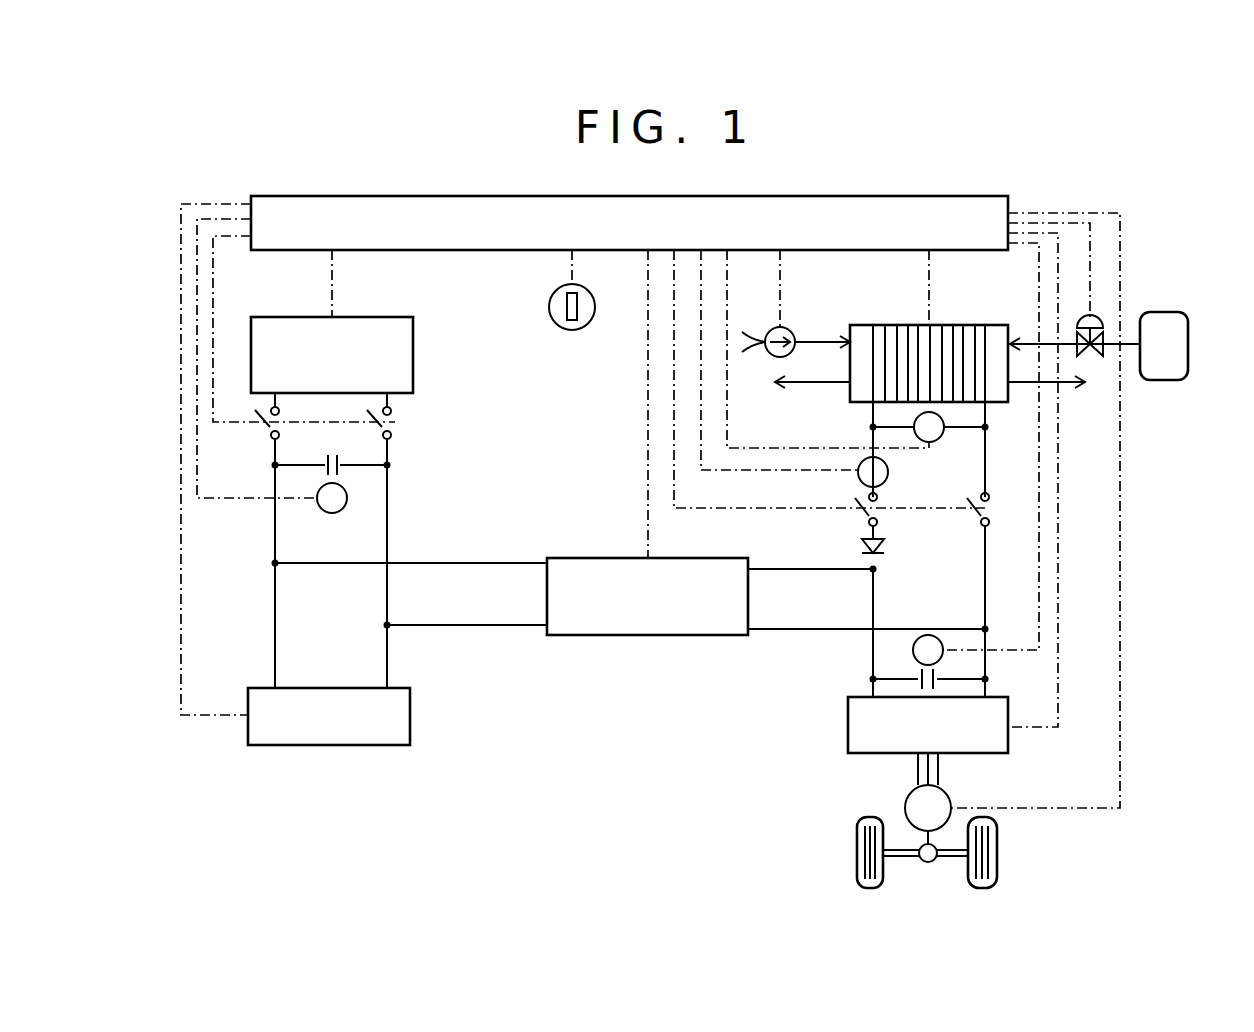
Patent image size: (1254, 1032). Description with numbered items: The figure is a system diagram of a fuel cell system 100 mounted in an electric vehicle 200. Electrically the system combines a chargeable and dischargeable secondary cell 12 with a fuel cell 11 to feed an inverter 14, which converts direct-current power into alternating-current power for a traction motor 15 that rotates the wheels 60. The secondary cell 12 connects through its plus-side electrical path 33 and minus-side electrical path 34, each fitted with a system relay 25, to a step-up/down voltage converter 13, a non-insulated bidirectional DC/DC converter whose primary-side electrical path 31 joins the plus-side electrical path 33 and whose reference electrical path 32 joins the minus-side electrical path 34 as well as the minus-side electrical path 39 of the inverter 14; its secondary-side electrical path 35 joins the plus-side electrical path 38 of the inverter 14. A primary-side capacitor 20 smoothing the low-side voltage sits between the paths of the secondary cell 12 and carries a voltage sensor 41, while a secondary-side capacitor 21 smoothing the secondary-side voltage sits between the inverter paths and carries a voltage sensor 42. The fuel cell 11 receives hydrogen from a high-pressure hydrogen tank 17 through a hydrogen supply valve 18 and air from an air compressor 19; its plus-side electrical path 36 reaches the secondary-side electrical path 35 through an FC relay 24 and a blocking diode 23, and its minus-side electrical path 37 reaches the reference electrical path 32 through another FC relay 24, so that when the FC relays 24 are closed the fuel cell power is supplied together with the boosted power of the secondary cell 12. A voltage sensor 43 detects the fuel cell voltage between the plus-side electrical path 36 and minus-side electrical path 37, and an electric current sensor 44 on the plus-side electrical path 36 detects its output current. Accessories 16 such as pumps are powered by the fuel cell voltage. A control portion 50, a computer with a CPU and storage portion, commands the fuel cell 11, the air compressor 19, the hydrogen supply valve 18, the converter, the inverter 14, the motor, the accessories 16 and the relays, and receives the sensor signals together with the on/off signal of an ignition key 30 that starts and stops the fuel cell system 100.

The fuel cell system 100 is at (174, 178).
The electric vehicle 200 is at (1137, 760).
The fuel cell 11 is at (995, 325).
The secondary cell 12 is at (378, 317).
The step-up/down voltage converter 13 is at (583, 636).
The inverter 14 is at (848, 742).
The traction motor 15 is at (905, 803).
The accessories 16 is at (355, 746).
The high-pressure hydrogen tank 17 is at (1178, 312).
The hydrogen supply valve 18 is at (1097, 335).
The air compressor 19 is at (800, 332).
The primary-side capacitor 20 is at (326, 453).
The secondary-side capacitor 21 is at (915, 689).
The blocking diode 23 is at (886, 549).
The FC relay 24 is at (868, 522).
The system relay 25 is at (392, 433).
The ignition key 30 is at (578, 330).
The primary-side electrical path 31 is at (497, 563).
The reference electrical path 32 is at (452, 627).
The plus-side electrical path of the secondary cell 33 is at (275, 484).
The minus-side electrical path of the secondary cell 34 is at (392, 517).
The secondary-side electrical path 35 is at (773, 569).
The plus-side electrical path of the fuel cell 36 is at (870, 411).
The minus-side electrical path of the fuel cell 37 is at (986, 443).
The plus-side electrical path of the inverter 38 is at (873, 656).
The minus-side electrical path of the inverter 39 is at (988, 665).
The voltage sensor 41 is at (321, 509).
The voltage sensor 42 is at (935, 637).
The voltage sensor 43 is at (940, 440).
The electric current sensor 44 is at (888, 476).
The control portion 50 is at (962, 196).
The wheels 60 is at (1000, 848).